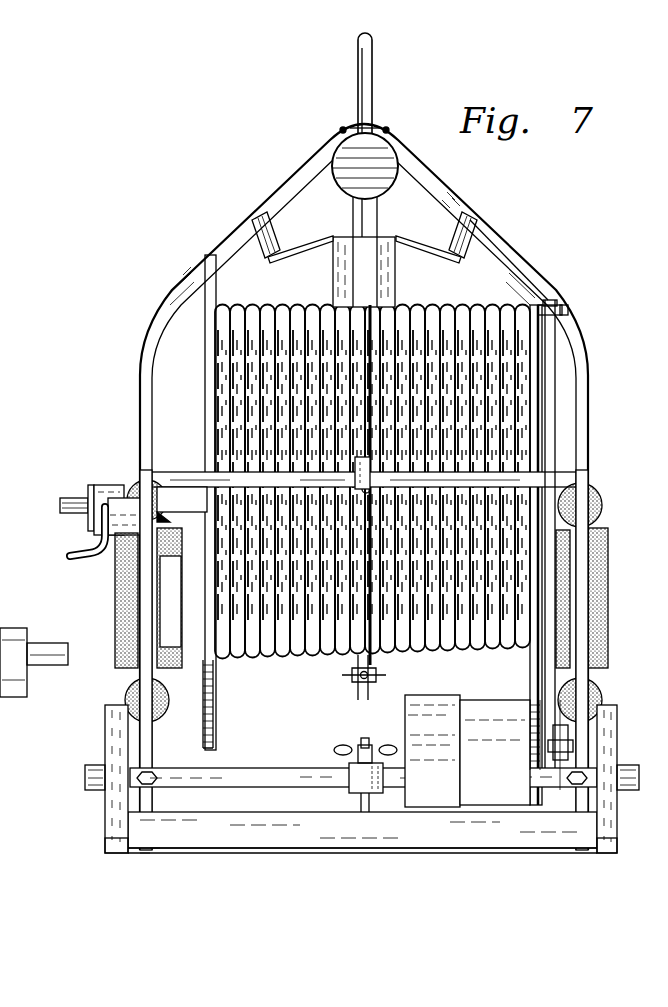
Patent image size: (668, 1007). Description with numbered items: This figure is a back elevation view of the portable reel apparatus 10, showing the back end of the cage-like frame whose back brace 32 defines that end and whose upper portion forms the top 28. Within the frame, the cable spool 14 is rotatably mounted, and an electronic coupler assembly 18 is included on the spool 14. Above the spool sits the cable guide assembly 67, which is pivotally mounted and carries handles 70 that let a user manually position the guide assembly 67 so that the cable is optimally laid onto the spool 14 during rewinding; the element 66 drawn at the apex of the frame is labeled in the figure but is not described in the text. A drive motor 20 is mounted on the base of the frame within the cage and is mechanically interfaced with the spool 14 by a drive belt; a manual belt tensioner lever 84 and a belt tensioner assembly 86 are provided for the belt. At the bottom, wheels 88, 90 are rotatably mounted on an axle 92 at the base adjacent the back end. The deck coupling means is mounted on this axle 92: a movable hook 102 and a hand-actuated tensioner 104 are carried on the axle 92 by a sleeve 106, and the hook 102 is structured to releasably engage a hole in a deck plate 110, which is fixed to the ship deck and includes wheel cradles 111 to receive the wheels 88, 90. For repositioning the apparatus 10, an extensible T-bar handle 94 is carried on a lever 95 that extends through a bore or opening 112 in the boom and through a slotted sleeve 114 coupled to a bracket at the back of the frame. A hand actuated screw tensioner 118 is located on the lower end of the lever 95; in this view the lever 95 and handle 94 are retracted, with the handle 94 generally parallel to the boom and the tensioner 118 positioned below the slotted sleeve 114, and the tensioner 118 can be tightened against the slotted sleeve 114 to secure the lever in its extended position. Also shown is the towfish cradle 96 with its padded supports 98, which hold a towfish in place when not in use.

The portable reel apparatus 10 is at (195, 155).
The cable spool 14 is at (205, 362).
The electronic coupler assembly 18 is at (10, 645).
The drive motor 20 is at (502, 805).
The top 28 is at (332, 142).
The back brace 32 is at (500, 245).
The ball joint 66 is at (352, 140).
The cable guide assembly 67 is at (340, 292).
The handles 70 is at (265, 224).
The manual belt tensioner lever 84 is at (556, 428).
The belt tensioner assembly 86 is at (550, 745).
The wheel 88 is at (606, 826).
The wheel 90 is at (112, 830).
The axle 92 is at (268, 780).
The extensible/retractable handle or T-bar 94 is at (373, 58).
The lever 95 is at (390, 292).
The towfish cradle 96 is at (128, 595).
The padded supports 98 is at (130, 700).
The movable hook 102 is at (371, 825).
The hand-actuated tensioner 104 is at (366, 738).
The sleeve 106 is at (357, 777).
The deck plate 110 is at (233, 840).
The wheel cradles 111 is at (116, 853).
The bore or opening 112 is at (395, 148).
The slotted sleeve 114 is at (356, 468).
The hand actuated screw tensioner 118 is at (385, 685).